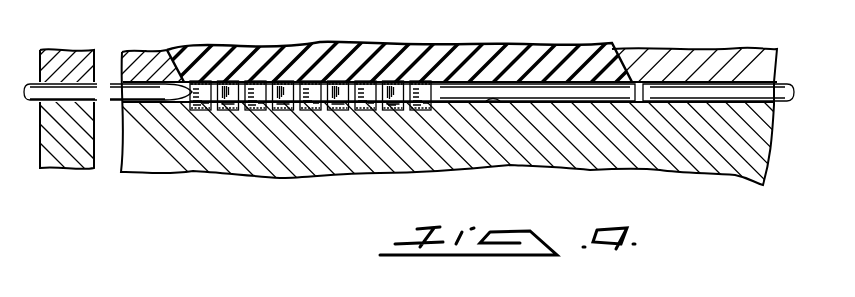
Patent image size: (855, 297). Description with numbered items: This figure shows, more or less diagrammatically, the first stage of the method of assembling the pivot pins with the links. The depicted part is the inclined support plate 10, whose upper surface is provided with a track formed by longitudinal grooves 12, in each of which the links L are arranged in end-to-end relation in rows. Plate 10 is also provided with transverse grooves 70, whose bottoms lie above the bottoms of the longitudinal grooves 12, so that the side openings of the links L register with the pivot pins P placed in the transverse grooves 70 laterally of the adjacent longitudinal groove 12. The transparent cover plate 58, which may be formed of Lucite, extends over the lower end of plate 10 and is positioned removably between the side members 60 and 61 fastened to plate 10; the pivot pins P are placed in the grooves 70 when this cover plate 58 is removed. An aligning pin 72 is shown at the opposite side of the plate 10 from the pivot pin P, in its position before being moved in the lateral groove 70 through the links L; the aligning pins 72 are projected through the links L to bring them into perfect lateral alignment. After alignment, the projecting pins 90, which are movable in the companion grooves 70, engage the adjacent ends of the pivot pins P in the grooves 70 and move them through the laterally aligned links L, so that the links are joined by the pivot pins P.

The side member 61 is at (123, 53).
The aligning pins 72 is at (117, 101).
The links L is at (257, 93).
The transparent cover plate 58 is at (347, 55).
The longitudinal grooves 12 is at (250, 111).
The plate 10 is at (303, 160).
The pivot pins P is at (540, 95).
The transverse grooves 70 is at (492, 101).
The side member 60 is at (702, 57).
The projecting pins 90 is at (738, 90).